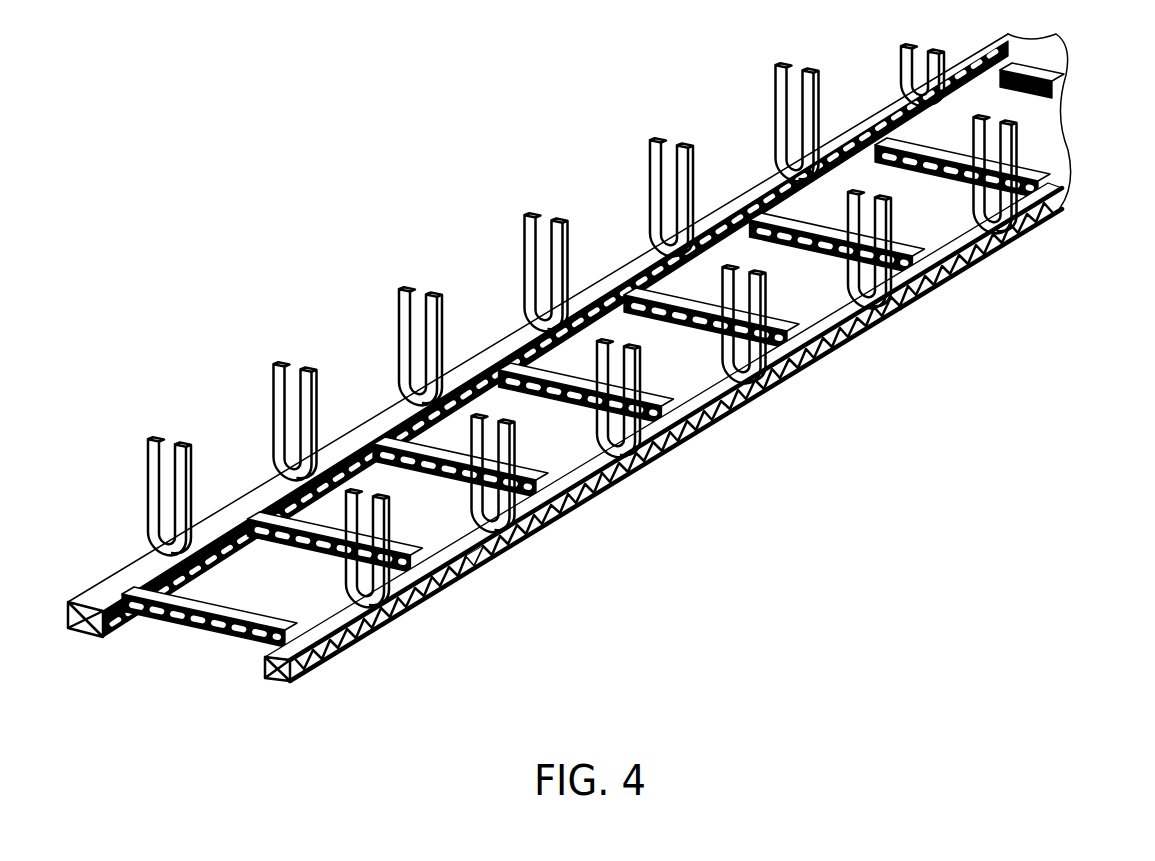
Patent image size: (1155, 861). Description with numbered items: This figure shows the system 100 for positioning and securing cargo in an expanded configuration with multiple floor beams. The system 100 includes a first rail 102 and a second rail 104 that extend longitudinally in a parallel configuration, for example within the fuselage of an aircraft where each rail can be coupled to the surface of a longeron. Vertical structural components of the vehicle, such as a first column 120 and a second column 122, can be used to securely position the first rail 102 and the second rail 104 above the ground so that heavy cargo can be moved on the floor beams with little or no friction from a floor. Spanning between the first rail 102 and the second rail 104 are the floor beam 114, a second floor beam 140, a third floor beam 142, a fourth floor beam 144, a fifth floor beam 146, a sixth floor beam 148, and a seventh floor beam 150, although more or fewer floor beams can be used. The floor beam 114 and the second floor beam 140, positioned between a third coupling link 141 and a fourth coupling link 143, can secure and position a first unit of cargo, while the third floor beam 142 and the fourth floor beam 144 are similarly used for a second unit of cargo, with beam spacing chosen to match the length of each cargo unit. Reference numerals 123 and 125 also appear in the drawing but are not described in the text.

The system 100 is at (605, 372).
The first rail 102 is at (222, 553).
The second rail 104 is at (325, 618).
The floor beam 114 is at (193, 632).
The first column 120 is at (150, 472).
The second column 122 is at (410, 613).
The second hanger post 123 is at (275, 398).
The web lattice of second side rail 125 is at (540, 533).
The second floor beam 140 is at (402, 548).
The third coupling link 141 is at (247, 513).
The third floor beam 142 is at (530, 478).
The fourth coupling link 143 is at (473, 567).
The fourth floor beam 144 is at (712, 412).
The fifth floor beam 146 is at (845, 335).
The sixth floor beam 148 is at (963, 273).
The seventh floor beam 150 is at (1040, 170).